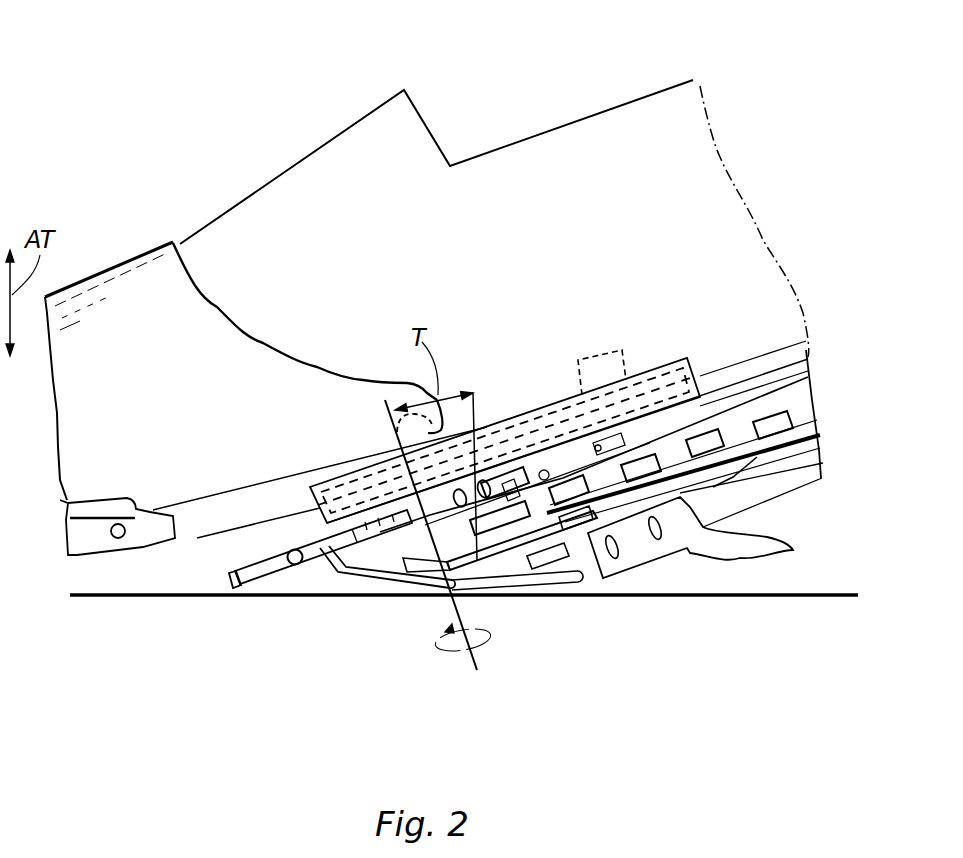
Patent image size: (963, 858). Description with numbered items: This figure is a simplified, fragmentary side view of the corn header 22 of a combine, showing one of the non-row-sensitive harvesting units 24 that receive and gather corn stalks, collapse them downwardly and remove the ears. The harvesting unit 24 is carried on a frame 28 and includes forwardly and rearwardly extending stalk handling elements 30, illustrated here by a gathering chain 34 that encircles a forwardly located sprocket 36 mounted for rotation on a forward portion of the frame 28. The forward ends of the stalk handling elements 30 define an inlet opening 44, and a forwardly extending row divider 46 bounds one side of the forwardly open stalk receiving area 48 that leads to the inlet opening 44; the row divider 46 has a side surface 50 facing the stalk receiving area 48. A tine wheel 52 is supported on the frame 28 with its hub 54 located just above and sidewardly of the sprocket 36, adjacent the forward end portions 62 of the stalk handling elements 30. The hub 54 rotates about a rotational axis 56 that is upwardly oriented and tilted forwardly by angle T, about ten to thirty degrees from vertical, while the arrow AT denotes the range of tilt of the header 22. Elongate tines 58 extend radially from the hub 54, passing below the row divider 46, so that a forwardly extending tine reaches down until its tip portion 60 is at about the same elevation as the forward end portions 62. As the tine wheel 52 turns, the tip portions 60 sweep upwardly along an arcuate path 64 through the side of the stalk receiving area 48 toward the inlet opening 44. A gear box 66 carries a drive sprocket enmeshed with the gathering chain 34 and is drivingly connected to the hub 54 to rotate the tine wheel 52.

The corn header 22 is at (557, 122).
The harvesting unit 24 is at (672, 556).
The frame 28 is at (502, 560).
The stalk handling elements 30 is at (770, 407).
The gathering chain 34 is at (810, 423).
The forwardly located sprocket 36 is at (562, 552).
The inlet opening 44 is at (517, 577).
The row divider 46 is at (100, 270).
The stalk receiving area 48 is at (257, 538).
The side surface 50 is at (136, 431).
The tine wheel 52 is at (245, 588).
The hub 54 is at (380, 550).
The rotational axis 56 is at (397, 433).
The tine 58 is at (300, 470).
The tip portion 60 is at (230, 572).
The forward end portions 62 is at (477, 560).
The arcuate path 64 is at (346, 578).
The gear box 66 is at (665, 365).